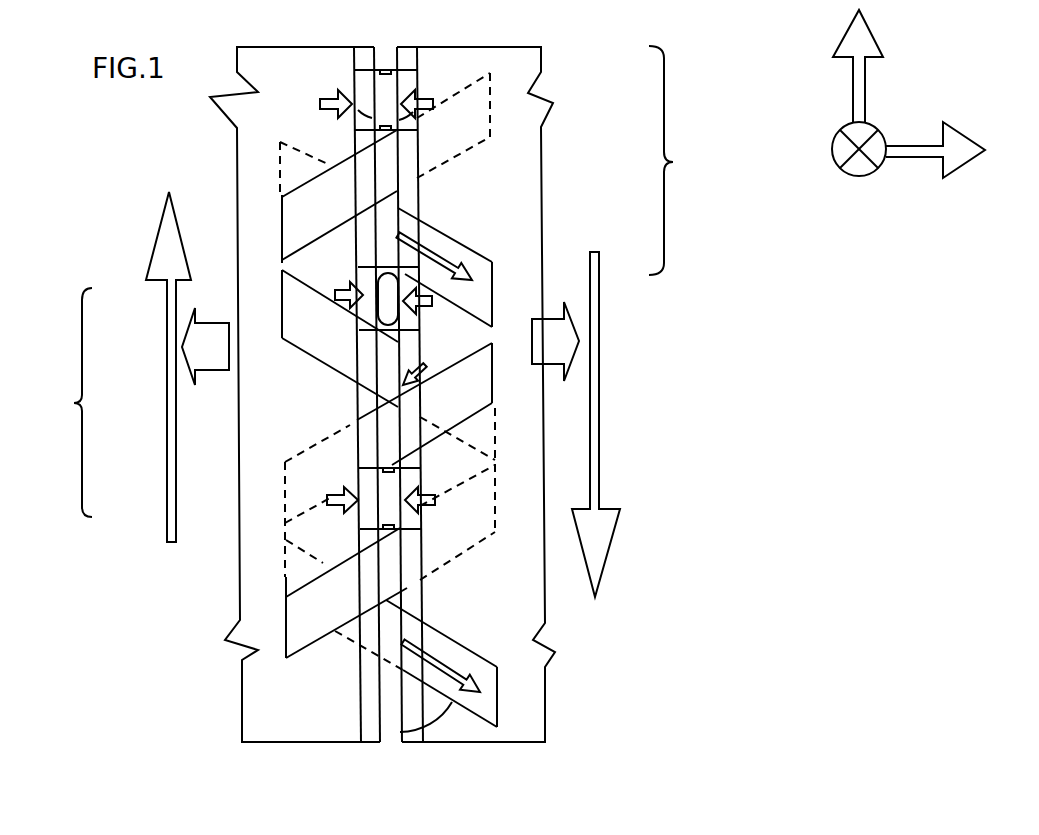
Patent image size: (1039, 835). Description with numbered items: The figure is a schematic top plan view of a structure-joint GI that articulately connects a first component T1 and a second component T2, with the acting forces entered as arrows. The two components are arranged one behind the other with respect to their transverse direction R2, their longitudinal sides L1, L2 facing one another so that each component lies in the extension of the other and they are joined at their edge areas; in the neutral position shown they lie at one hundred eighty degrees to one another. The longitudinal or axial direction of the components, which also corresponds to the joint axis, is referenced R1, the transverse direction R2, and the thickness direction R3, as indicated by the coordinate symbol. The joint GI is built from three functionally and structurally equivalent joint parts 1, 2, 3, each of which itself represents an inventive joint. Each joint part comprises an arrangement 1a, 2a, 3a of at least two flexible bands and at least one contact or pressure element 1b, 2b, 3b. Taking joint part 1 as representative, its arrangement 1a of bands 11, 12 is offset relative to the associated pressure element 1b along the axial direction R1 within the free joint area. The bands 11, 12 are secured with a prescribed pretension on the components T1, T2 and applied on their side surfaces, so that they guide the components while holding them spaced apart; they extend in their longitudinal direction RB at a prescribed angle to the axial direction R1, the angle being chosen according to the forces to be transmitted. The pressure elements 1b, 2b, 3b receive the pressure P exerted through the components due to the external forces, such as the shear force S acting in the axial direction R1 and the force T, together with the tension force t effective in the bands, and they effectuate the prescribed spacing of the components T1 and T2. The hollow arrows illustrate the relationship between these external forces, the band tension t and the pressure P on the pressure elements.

The joint part 1 is at (208, 627).
The arrangement of flexible bands 1a is at (442, 550).
The pressure element 1b is at (415, 467).
The joint part 2 is at (235, 392).
The arrangement of flexible bands 2a is at (332, 427).
The pressure element 2b is at (325, 267).
The joint part 3 is at (493, 160).
The arrangement of flexible bands 3a is at (458, 182).
The pressure element 3b is at (418, 63).
The band 11 is at (479, 260).
The band 12 is at (492, 116).
The longitudinal side L1 is at (372, 60).
The longitudinal side L2 is at (398, 60).
The pressure P is at (364, 304).
The external force T is at (380, 343).
The external shear force S is at (383, 394).
The tension force t is at (428, 248).
The longitudinal direction of the bands RB is at (403, 670).
The joint GI is at (383, 757).
The first component T1 is at (257, 708).
The second component T2 is at (533, 722).
The longitudinal direction R1 is at (840, 66).
The transverse direction R2 is at (947, 162).
The thickness direction R3 is at (834, 153).